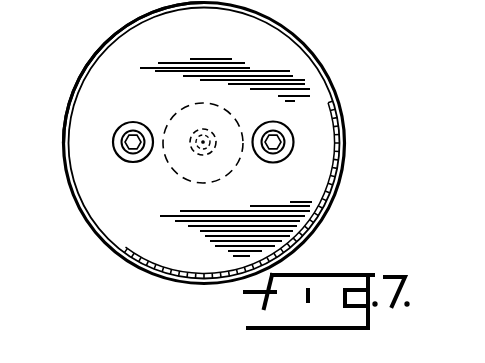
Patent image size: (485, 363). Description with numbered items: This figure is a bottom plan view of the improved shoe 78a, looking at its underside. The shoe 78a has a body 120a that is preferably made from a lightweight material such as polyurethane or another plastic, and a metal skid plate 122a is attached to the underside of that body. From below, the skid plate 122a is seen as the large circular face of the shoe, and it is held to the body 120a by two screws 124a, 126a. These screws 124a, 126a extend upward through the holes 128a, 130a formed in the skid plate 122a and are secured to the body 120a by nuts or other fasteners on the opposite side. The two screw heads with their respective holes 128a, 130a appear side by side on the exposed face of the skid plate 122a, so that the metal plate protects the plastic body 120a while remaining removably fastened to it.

The shoe 78a is at (342, 91).
The body 120a is at (126, 251).
The metal skid plate 122a is at (196, 264).
The screw 124a is at (156, 95).
The screw 126a is at (292, 138).
The hole 128a is at (115, 148).
The hole 130a is at (286, 160).